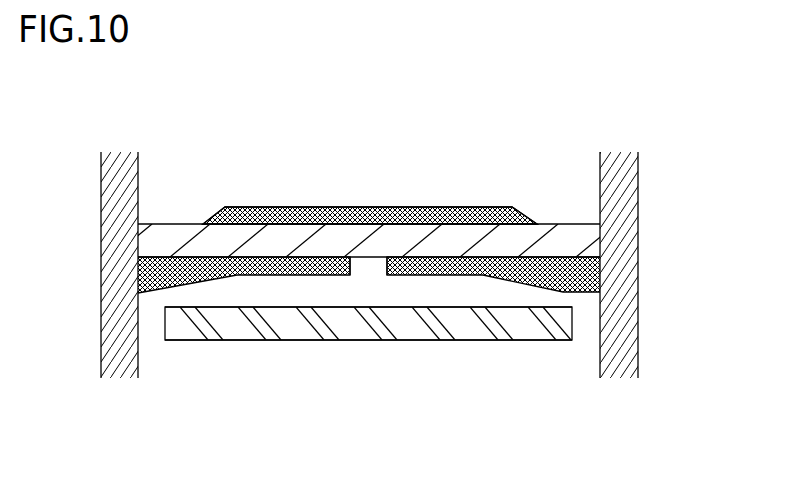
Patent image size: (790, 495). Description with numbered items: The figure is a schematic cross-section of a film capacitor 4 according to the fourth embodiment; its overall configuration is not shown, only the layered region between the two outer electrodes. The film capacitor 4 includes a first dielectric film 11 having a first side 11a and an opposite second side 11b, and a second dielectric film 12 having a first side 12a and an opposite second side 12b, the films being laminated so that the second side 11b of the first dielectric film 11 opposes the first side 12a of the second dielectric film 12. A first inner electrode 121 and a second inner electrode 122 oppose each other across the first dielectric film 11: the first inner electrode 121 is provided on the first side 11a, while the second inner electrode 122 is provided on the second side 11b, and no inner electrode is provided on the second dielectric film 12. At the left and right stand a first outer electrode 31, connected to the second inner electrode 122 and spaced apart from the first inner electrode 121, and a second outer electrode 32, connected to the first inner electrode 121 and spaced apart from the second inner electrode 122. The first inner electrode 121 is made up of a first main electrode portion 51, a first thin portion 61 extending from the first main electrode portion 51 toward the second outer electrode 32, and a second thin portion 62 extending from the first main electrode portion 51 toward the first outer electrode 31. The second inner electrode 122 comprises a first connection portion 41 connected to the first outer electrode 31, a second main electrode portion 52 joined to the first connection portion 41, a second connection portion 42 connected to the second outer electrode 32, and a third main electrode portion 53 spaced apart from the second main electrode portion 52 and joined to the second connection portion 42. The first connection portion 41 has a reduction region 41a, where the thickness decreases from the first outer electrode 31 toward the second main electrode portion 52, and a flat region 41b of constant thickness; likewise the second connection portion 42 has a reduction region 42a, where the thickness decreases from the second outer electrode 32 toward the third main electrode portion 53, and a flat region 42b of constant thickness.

The film capacitor 4 is at (650, 124).
The first dielectric film 11 is at (311, 243).
The first side 11a is at (150, 225).
The second side 11b is at (160, 265).
The second dielectric film 12 is at (443, 326).
The first side 12a is at (573, 309).
The second side 12b is at (573, 341).
The first outer electrode 31 is at (111, 186).
The second outer electrode 32 is at (629, 188).
The first connection portion 41 is at (245, 341).
The reduction region 41a is at (207, 282).
The flat region 41b is at (152, 292).
The second connection portion 42 is at (490, 341).
The reduction region 42a is at (520, 283).
The flat region 42b is at (567, 287).
The first main electrode portion 51 is at (343, 207).
The second main electrode portion 52 is at (303, 270).
The third main electrode portion 53 is at (405, 320).
The first thin portion 61 is at (503, 170).
The second thin portion 62 is at (229, 207).
The first inner electrode 121 is at (370, 148).
The second inner electrode 122 is at (369, 364).